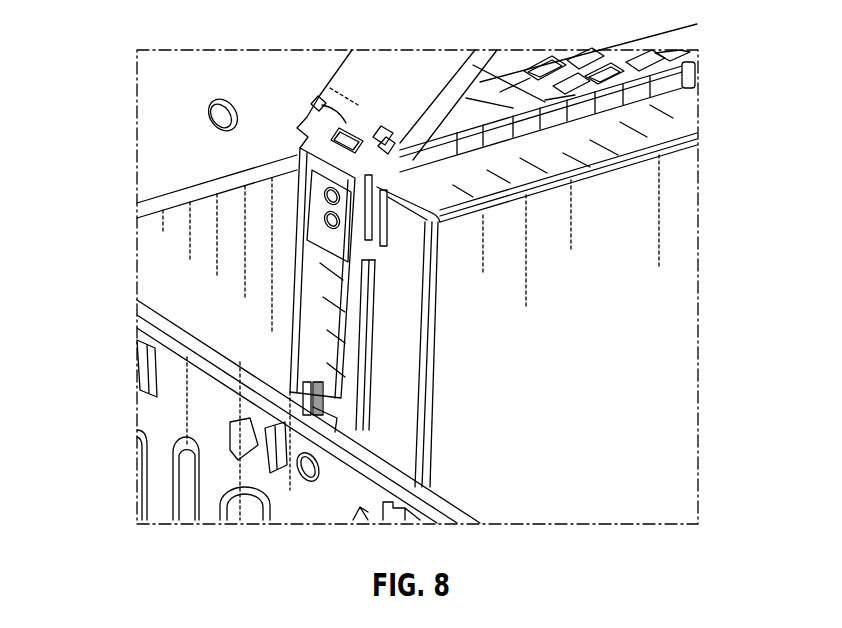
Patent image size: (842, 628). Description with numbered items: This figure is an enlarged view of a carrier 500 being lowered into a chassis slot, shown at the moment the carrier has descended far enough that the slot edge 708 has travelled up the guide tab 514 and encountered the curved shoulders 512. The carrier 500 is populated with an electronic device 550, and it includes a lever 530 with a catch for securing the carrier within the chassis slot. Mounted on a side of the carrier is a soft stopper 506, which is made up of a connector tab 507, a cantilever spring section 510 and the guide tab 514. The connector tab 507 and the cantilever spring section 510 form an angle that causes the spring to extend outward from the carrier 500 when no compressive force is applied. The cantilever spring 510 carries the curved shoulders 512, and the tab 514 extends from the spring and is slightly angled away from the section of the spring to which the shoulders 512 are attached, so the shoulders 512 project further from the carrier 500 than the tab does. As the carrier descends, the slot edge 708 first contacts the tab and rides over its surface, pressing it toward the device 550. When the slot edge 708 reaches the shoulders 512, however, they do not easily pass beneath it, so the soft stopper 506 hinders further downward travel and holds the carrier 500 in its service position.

The carrier 500 is at (374, 122).
The soft stopper 506 is at (318, 254).
The connector tab 507 is at (305, 214).
The cantilever spring section 510 is at (333, 308).
The curved shoulders 512 is at (323, 418).
The guide tab 514 is at (343, 397).
The lever 530 is at (316, 101).
The electronic device 550 is at (611, 401).
The slot edge 708 is at (377, 472).